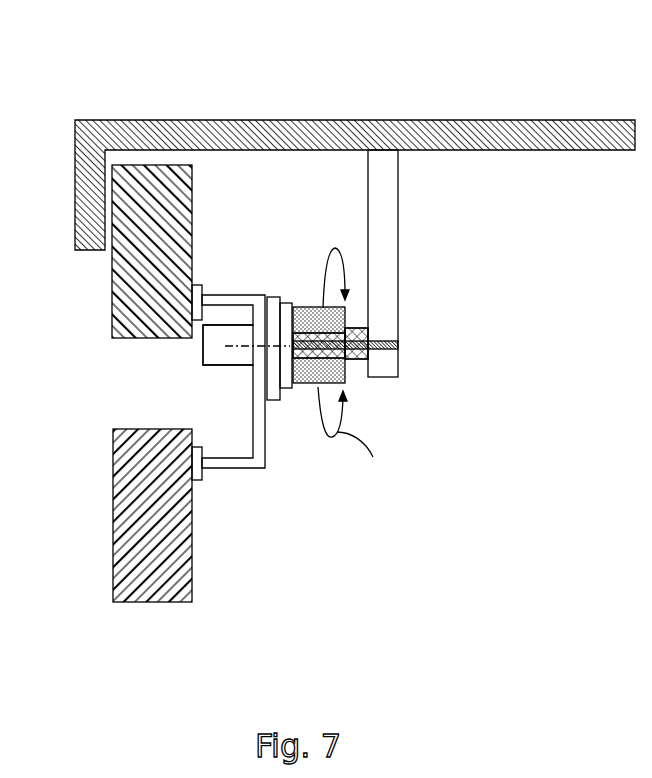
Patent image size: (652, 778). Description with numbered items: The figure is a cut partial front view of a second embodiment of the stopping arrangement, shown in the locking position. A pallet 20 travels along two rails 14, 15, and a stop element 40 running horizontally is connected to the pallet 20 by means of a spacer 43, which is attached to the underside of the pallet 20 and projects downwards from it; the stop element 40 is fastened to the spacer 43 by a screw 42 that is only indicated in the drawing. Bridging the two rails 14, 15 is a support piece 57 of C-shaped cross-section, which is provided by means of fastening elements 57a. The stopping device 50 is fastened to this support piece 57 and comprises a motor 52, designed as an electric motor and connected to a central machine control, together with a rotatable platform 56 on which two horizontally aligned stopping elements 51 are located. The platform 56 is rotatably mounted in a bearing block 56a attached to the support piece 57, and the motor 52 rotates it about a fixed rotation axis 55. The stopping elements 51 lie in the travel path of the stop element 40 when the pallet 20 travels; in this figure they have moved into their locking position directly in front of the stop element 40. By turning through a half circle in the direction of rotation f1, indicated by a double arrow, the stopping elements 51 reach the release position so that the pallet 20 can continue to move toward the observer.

The pallet 20 is at (245, 120).
The rail 14 is at (132, 308).
The rail 15 is at (140, 533).
The spacer 43 is at (385, 287).
The screw 42 is at (387, 335).
The stop element 40 is at (355, 362).
The stopping device 50 is at (280, 379).
The stopping element 51 is at (310, 308).
The motor 52 is at (228, 357).
The rotation axis 55 is at (252, 345).
The rotatable platform 56 is at (287, 400).
The bearing block 56a is at (275, 295).
The support piece 57 is at (217, 467).
The fastening element 57a is at (197, 287).
The direction of rotation f1 is at (352, 480).